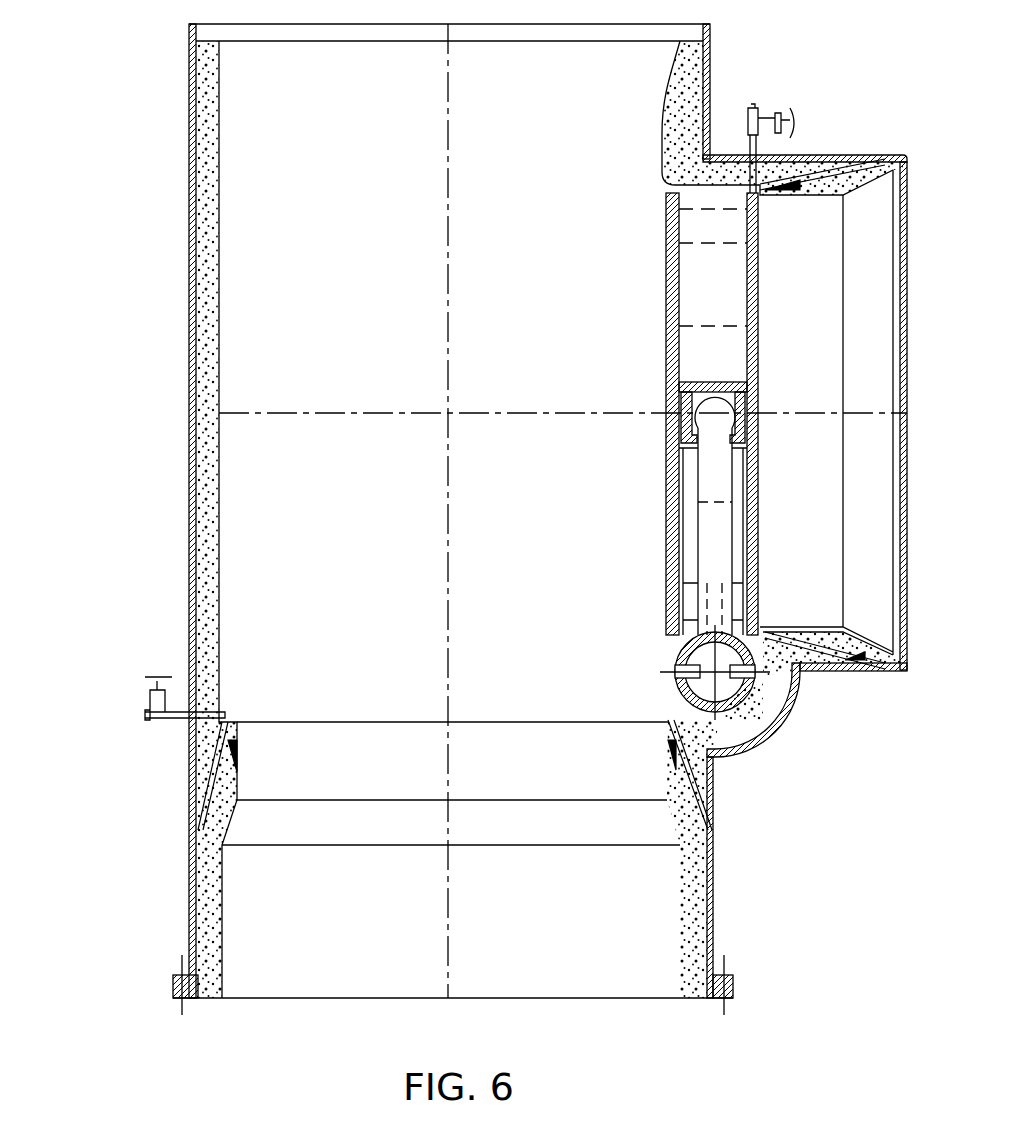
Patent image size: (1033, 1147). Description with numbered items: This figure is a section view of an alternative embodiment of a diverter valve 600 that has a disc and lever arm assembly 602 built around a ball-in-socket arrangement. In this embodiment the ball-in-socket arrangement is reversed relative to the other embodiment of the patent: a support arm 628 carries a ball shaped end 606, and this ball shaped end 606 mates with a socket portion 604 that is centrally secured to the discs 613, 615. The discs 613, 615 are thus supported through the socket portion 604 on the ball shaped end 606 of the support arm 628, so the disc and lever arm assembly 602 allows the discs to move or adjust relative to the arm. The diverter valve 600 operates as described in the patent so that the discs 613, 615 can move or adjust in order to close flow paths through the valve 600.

The diverter valve 600 is at (83, 255).
The disc and lever arm assembly 602 is at (598, 497).
The disc 613 is at (666, 346).
The disc 615 is at (760, 315).
The socket portion 604 is at (747, 385).
The ball shaped end 606 is at (712, 413).
The support arm 628 is at (698, 545).